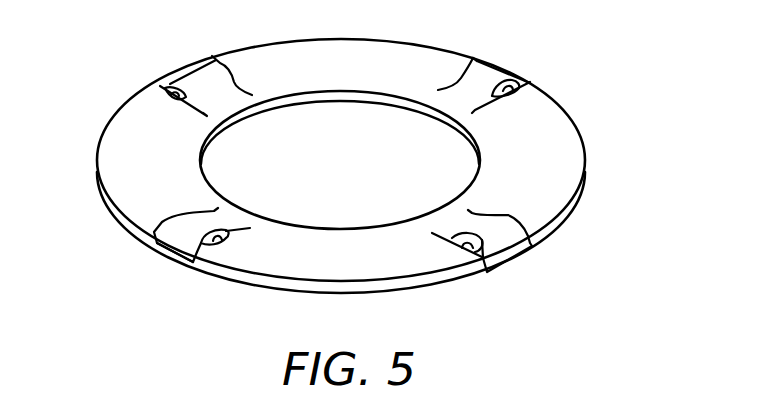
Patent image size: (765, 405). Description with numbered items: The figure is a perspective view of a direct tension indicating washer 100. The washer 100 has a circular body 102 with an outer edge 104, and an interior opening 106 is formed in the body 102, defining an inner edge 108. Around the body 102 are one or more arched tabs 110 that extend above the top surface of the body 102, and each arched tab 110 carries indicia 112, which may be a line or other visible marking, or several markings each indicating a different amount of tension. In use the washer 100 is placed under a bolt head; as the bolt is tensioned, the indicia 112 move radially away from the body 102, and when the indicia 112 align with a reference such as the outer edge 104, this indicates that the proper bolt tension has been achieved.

The direct tension indicating washer 100 is at (357, 170).
The circular body 102 is at (558, 167).
The outer edge 104 is at (588, 188).
The interior opening 106 is at (348, 119).
The inner edge 108 is at (470, 141).
The arched tabs 110 is at (133, 266).
The indicia 112 is at (160, 223).